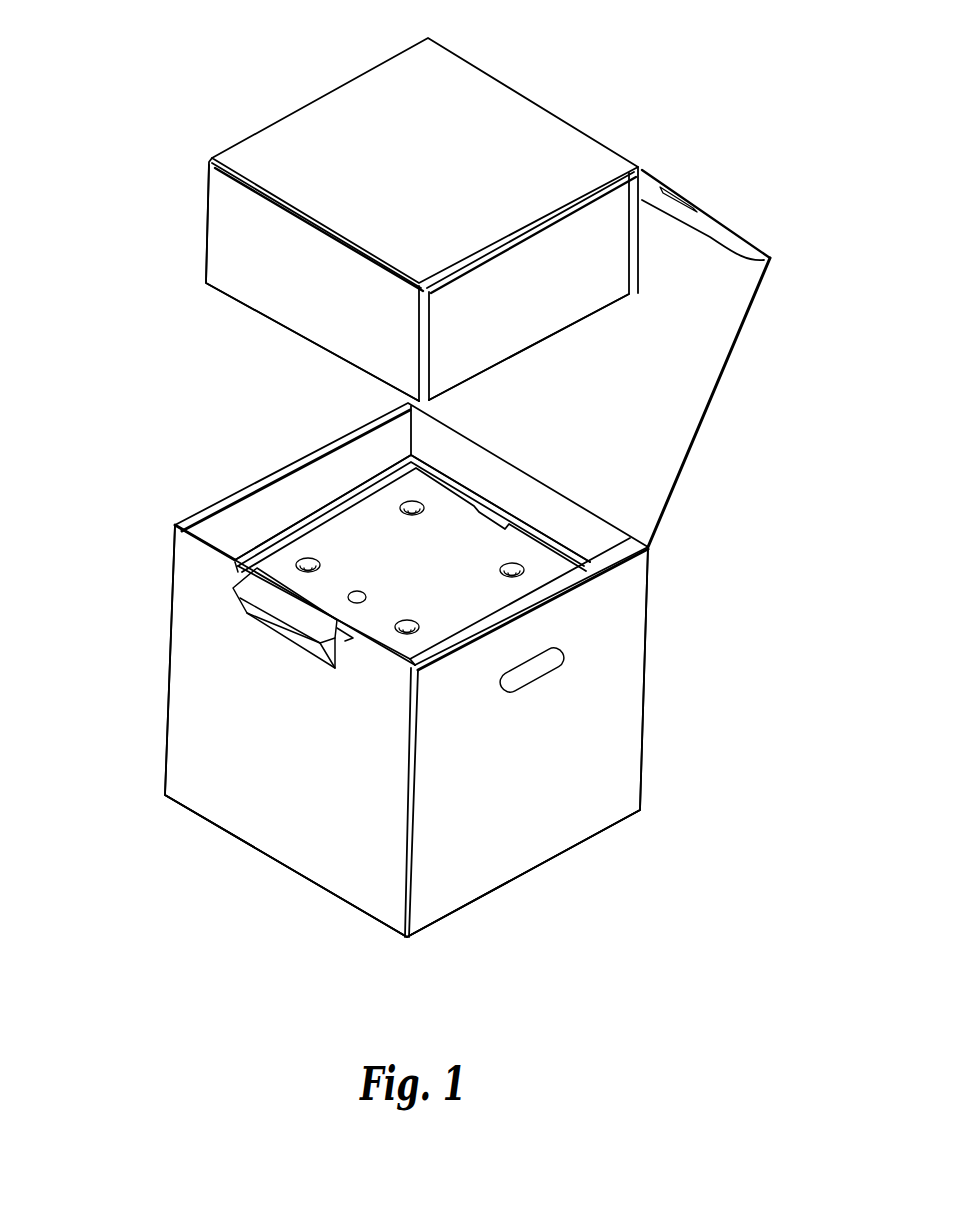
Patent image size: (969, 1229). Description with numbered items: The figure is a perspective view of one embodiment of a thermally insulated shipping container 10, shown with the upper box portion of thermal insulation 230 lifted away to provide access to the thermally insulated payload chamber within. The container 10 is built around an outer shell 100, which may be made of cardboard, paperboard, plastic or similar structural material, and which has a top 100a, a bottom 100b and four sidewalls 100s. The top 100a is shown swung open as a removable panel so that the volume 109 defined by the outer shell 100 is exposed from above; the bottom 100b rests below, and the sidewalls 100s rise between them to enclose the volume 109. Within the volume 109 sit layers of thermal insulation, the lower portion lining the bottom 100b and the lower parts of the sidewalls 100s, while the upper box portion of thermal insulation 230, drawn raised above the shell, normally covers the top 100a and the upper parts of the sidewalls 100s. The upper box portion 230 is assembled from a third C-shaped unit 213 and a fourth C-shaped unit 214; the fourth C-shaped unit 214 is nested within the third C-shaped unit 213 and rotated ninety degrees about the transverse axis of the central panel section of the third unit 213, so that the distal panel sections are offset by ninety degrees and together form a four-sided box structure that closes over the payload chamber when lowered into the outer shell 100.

The thermally insulated shipping container 10 is at (686, 71).
The upper box portion of thermal insulation 230 is at (291, 82).
The third C-shaped unit 213 is at (220, 232).
The fourth C-shaped unit 214 is at (603, 235).
The outer shell 100 is at (180, 723).
The top 100a is at (736, 312).
The bottom 100b is at (303, 878).
The sidewalls 100s is at (248, 523).
The volume 109 is at (298, 500).